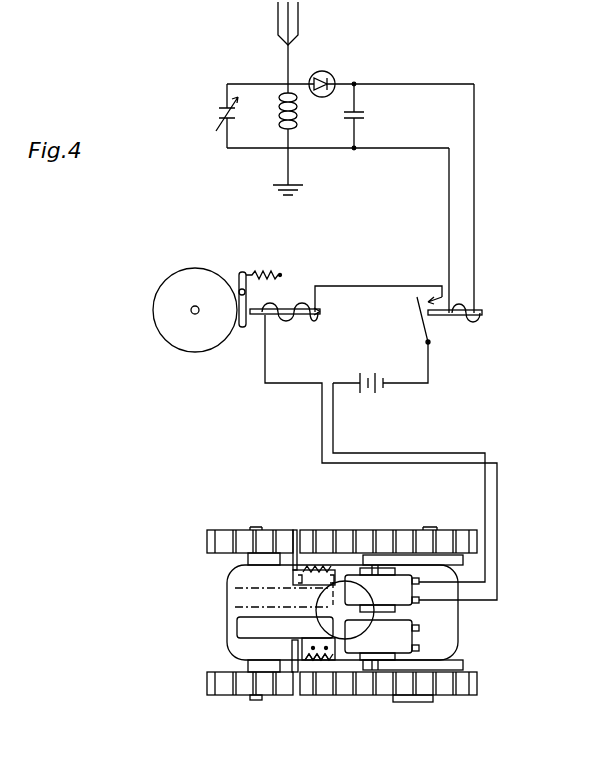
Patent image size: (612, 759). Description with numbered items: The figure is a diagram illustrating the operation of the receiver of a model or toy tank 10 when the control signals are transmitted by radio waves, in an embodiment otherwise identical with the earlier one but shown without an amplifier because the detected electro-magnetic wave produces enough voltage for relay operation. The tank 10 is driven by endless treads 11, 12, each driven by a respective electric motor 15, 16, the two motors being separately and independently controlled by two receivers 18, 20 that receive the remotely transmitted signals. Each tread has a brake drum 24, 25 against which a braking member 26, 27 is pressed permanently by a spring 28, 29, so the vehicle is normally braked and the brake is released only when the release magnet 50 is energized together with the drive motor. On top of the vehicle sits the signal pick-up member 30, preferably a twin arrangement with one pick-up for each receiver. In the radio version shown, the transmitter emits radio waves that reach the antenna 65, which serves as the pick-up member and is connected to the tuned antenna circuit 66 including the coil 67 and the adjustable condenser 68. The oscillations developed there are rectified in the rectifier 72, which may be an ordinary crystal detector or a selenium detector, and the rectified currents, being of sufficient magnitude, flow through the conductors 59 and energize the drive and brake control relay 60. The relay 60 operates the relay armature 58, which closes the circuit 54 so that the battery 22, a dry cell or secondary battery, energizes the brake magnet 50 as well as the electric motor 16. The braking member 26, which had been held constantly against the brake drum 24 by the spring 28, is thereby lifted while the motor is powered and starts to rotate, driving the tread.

The tank 10 is at (428, 702).
The endless tread 11 is at (375, 690).
The endless tread 12 is at (374, 536).
The electric motor 15 is at (388, 633).
The electric motor 16 is at (405, 600).
The receiver 18 is at (255, 623).
The receiver 20 is at (255, 597).
The battery 22 is at (383, 390).
The brake drum 24 is at (212, 350).
The brake drum 25 is at (238, 696).
The braking member 26 is at (247, 299).
The braking member 27 is at (293, 696).
The spring 28 is at (262, 268).
The spring 29 is at (312, 660).
The signal pick-up member 30 is at (356, 606).
The release magnet 50 is at (324, 319).
The circuit 54 is at (370, 286).
The relay armature 58 is at (416, 307).
The conductors 59 is at (474, 198).
The drive and brake control relay 60 is at (466, 320).
The antenna 65 is at (288, 58).
The tuned antenna circuit 66 is at (253, 150).
The coil 67 is at (286, 124).
The adjustable condenser 68 is at (220, 130).
The rectifier 72 is at (350, 74).